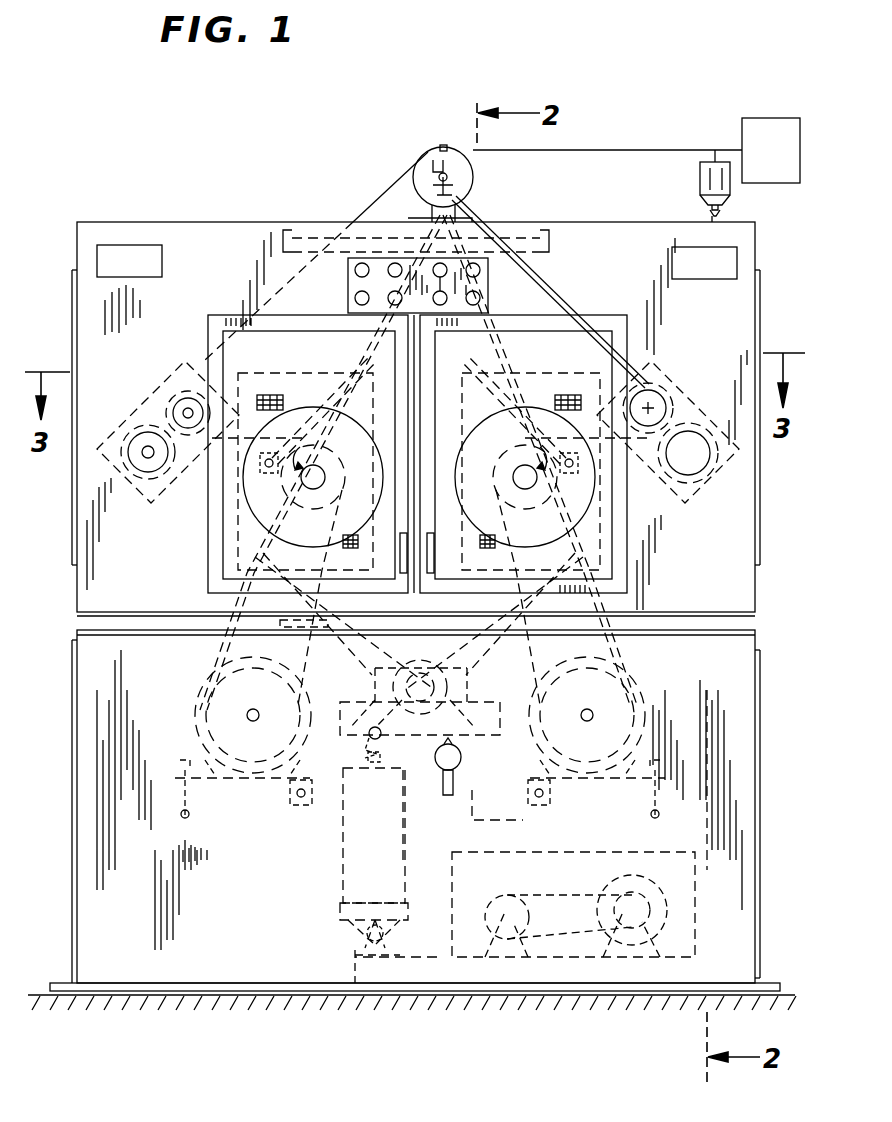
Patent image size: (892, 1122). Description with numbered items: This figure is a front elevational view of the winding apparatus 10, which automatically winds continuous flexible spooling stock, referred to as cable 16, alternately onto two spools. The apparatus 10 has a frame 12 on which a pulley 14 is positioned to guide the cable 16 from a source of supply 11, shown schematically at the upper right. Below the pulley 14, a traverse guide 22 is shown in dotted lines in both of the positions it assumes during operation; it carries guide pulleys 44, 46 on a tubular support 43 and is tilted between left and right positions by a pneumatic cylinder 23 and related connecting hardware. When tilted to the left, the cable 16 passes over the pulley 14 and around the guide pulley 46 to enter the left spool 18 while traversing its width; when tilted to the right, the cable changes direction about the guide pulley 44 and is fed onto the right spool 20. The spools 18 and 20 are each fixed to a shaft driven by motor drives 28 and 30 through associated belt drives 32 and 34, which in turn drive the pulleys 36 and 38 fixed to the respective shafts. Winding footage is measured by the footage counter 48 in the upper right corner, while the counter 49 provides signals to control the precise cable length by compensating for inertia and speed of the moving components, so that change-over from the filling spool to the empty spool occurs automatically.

The apparatus 10 is at (416, 552).
The source of supply 11 is at (774, 118).
The frame 12 is at (128, 222).
The pulley 14 is at (474, 178).
The cable 16 is at (638, 148).
The left spool 18 is at (318, 457).
The right spool 20 is at (508, 460).
The traverse guide 22 is at (673, 478).
The pneumatic cylinder 23 is at (343, 848).
The motor drive 28 is at (243, 737).
The motor drive 30 is at (596, 737).
The belt drive 32 is at (197, 655).
The belt drive 34 is at (640, 655).
The pulley 36 is at (300, 447).
The pulley 38 is at (555, 445).
The tubular support 43 is at (640, 520).
The guide pulley 44 is at (125, 432).
The guide pulley 46 is at (165, 392).
The footage counter 48 is at (722, 248).
The counter 49 is at (152, 245).